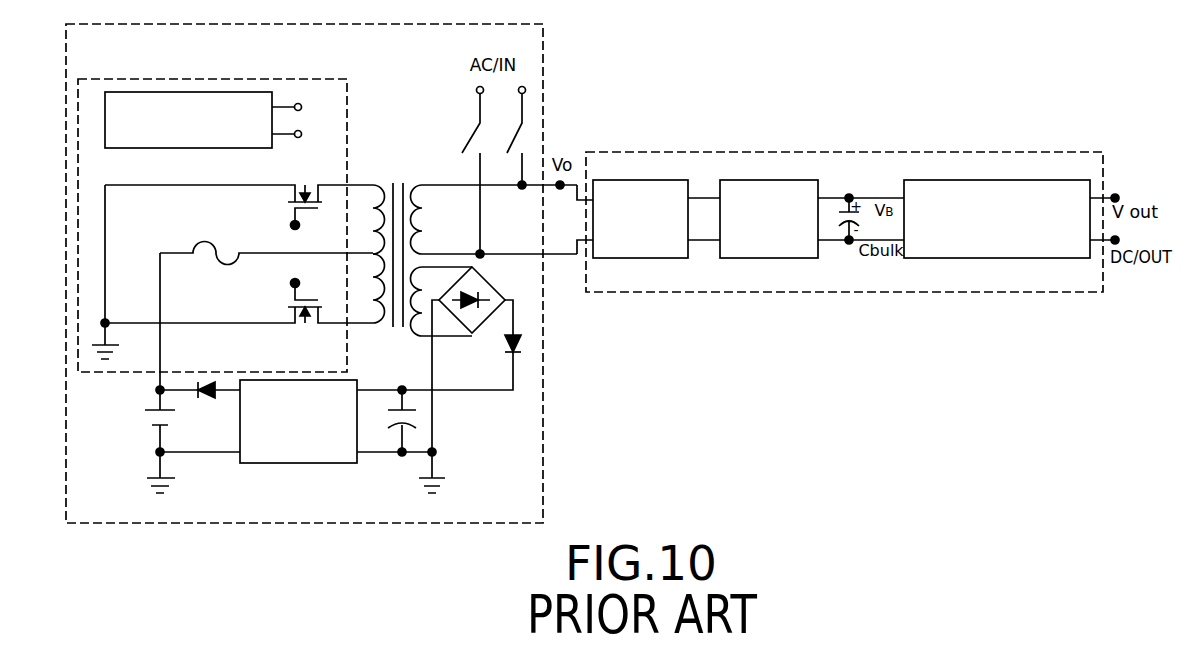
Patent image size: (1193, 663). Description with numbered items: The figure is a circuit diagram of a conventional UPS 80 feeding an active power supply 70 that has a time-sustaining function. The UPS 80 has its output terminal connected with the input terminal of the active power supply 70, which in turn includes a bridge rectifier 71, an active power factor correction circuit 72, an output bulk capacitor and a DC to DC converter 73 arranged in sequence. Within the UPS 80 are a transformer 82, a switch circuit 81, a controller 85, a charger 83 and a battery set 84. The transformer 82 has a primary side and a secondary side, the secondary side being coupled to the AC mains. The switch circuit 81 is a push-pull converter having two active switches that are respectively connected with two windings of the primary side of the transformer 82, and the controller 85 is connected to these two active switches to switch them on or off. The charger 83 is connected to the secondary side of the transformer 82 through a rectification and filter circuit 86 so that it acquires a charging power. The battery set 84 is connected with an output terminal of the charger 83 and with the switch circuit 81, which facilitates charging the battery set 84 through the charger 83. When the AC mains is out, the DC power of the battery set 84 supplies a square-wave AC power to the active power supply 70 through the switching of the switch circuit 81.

The active power supply 70 is at (1036, 158).
The bridge rectifier 71 is at (627, 180).
The active power factor correction (PFC) circuit 72 is at (750, 180).
The DC to DC converter 73 is at (958, 180).
The UPS 80 is at (545, 437).
The switch circuit 81 is at (315, 79).
The transformer 82 is at (395, 168).
The charger 83 is at (290, 463).
The battery set 84 is at (147, 409).
The controller 85 is at (188, 92).
The rectification and filter circuit 86 is at (439, 380).